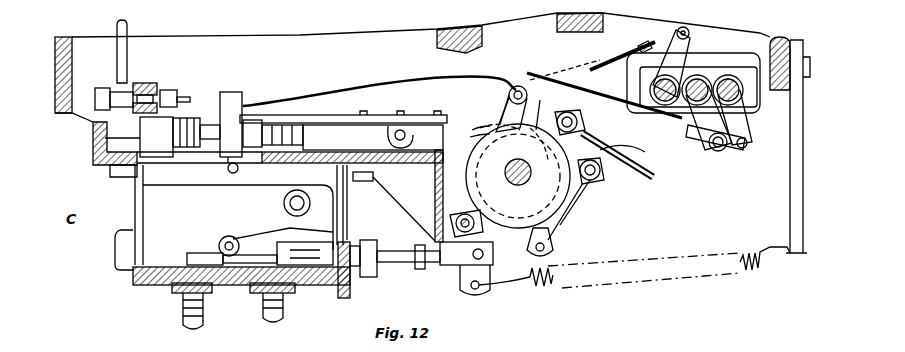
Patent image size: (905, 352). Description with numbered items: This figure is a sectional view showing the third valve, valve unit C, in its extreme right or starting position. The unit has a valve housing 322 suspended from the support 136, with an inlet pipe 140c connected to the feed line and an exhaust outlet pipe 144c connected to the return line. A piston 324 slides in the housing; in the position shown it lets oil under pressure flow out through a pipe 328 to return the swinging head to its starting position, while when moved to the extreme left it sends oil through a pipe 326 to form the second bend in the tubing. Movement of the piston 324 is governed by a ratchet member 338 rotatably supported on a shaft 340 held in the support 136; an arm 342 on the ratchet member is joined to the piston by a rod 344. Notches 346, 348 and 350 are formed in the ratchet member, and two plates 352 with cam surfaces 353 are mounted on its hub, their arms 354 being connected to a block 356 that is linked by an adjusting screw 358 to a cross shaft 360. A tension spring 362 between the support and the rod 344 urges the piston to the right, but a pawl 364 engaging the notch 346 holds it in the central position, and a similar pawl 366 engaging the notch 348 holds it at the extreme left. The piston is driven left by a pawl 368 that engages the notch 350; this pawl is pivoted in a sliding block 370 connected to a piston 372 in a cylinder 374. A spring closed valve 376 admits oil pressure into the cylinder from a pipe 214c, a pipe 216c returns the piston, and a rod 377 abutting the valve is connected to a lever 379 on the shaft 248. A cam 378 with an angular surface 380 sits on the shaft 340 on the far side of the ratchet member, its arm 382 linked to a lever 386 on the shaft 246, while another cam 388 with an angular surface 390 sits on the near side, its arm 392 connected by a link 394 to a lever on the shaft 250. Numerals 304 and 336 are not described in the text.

The support 136 is at (370, 40).
The pipe 214c is at (117, 27).
The spring closed valve 376 is at (142, 85).
The cylinder 374 is at (218, 115).
The piston 372 is at (140, 138).
The pipe 216c is at (228, 168).
The sliding block 370 is at (341, 135).
The rod 377 is at (300, 97).
The pawl 364 is at (385, 187).
The angular surface 380 is at (373, 177).
The valve housing 322 is at (165, 285).
The pipe 326 is at (183, 322).
The pipe 328 is at (283, 312).
The piston 324 is at (328, 284).
The inlet pipe 140c is at (222, 238).
The exhaust outlet pipe 144c is at (285, 210).
The rod 344 is at (383, 250).
The notch 346 is at (505, 172).
The shaft 340 is at (520, 186).
The notch 350 is at (500, 136).
The cam surfaces 353 is at (536, 144).
The arm 392 is at (521, 85).
The arm 382 is at (512, 88).
The cam 378 is at (477, 140).
The pawl 368 is at (473, 137).
The angular surface 390 is at (488, 122).
The block 356 is at (568, 112).
The plates 352 is at (538, 127).
The link 394 is at (560, 75).
The rod 304 is at (603, 67).
The arms 354 is at (620, 104).
The cross shaft 360 is at (625, 138).
The adjusting screw 358 is at (640, 165).
The notch 348 is at (603, 171).
The pawl 366 is at (590, 205).
The ratchet member 338 is at (560, 213).
The arm 342 is at (548, 245).
The cam 388 is at (515, 280).
The tension spring 362 is at (548, 285).
The shaft 250 is at (666, 80).
The pivot 336 is at (686, 30).
The shaft 246 is at (733, 80).
The shaft 248 is at (701, 80).
The lever 386 is at (748, 148).
The lever 379 is at (722, 152).